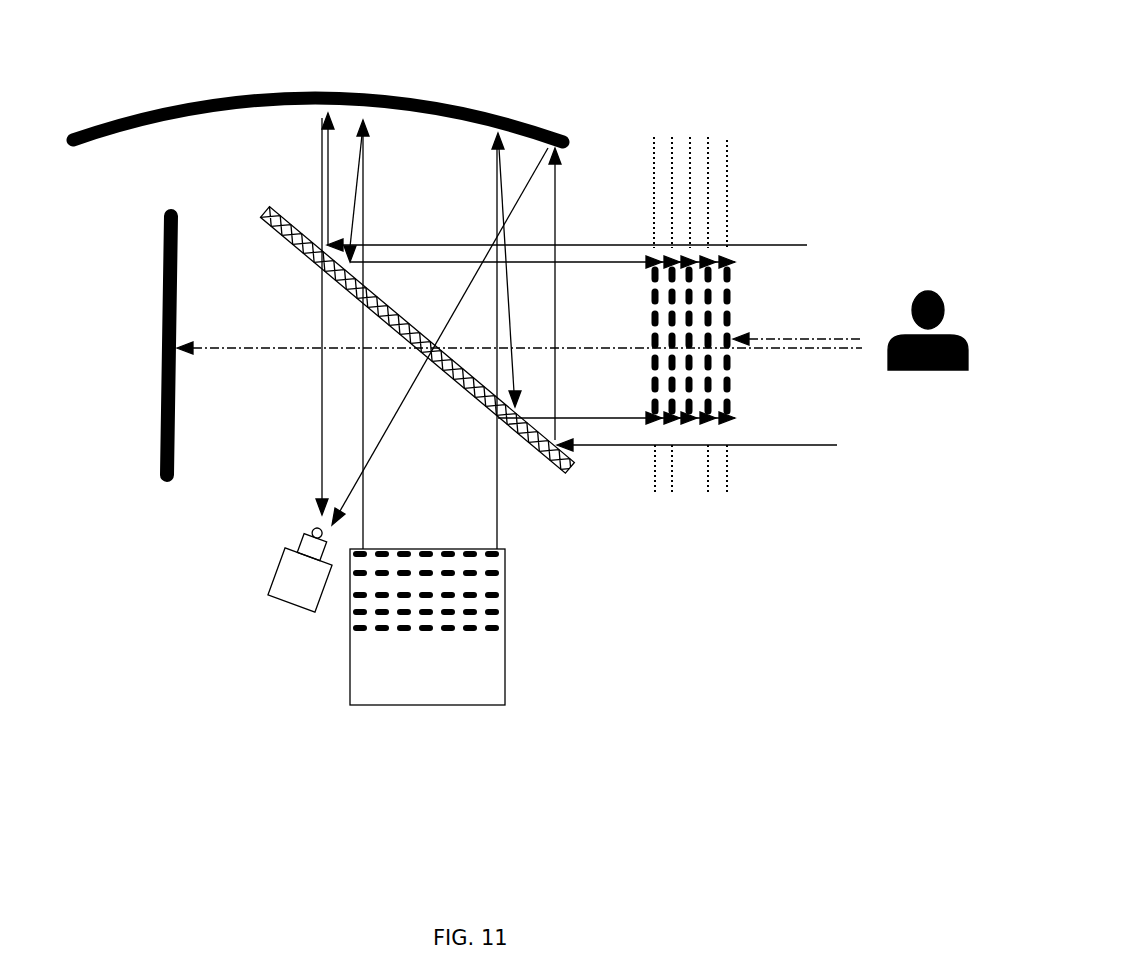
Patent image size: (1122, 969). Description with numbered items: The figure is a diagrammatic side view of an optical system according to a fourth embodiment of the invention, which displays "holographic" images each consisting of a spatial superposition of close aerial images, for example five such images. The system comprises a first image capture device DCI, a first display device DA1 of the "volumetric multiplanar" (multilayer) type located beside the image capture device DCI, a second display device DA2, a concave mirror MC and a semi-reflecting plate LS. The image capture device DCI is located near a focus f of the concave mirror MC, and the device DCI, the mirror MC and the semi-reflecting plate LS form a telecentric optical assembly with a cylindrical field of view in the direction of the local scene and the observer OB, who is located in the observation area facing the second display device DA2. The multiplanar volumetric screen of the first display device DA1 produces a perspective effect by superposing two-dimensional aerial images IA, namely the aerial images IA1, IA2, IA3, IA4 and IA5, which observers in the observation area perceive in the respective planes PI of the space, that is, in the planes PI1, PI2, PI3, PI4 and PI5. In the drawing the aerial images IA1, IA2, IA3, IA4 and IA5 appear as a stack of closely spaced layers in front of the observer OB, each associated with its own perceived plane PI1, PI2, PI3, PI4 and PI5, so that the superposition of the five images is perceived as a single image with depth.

The concave mirror MC is at (197, 103).
The semi-reflecting plate LS is at (288, 213).
The second display device DA2 is at (162, 267).
The first display device DA1 is at (372, 705).
The first image capture device DCI is at (292, 608).
The focus of the concave mirror f is at (308, 531).
The observer OB is at (928, 344).
The planes PI is at (822, 19).
The first plane PI1 is at (653, 135).
The second plane PI2 is at (672, 135).
The third plane PI3 is at (690, 135).
The fourth plane PI4 is at (708, 135).
The fifth plane PI5 is at (727, 140).
The aerial images IA is at (820, 538).
The first aerial image IA1 is at (652, 445).
The second aerial image IA2 is at (668, 445).
The third aerial image IA3 is at (689, 445).
The fourth aerial image IA4 is at (708, 445).
The fifth aerial image IA5 is at (733, 445).